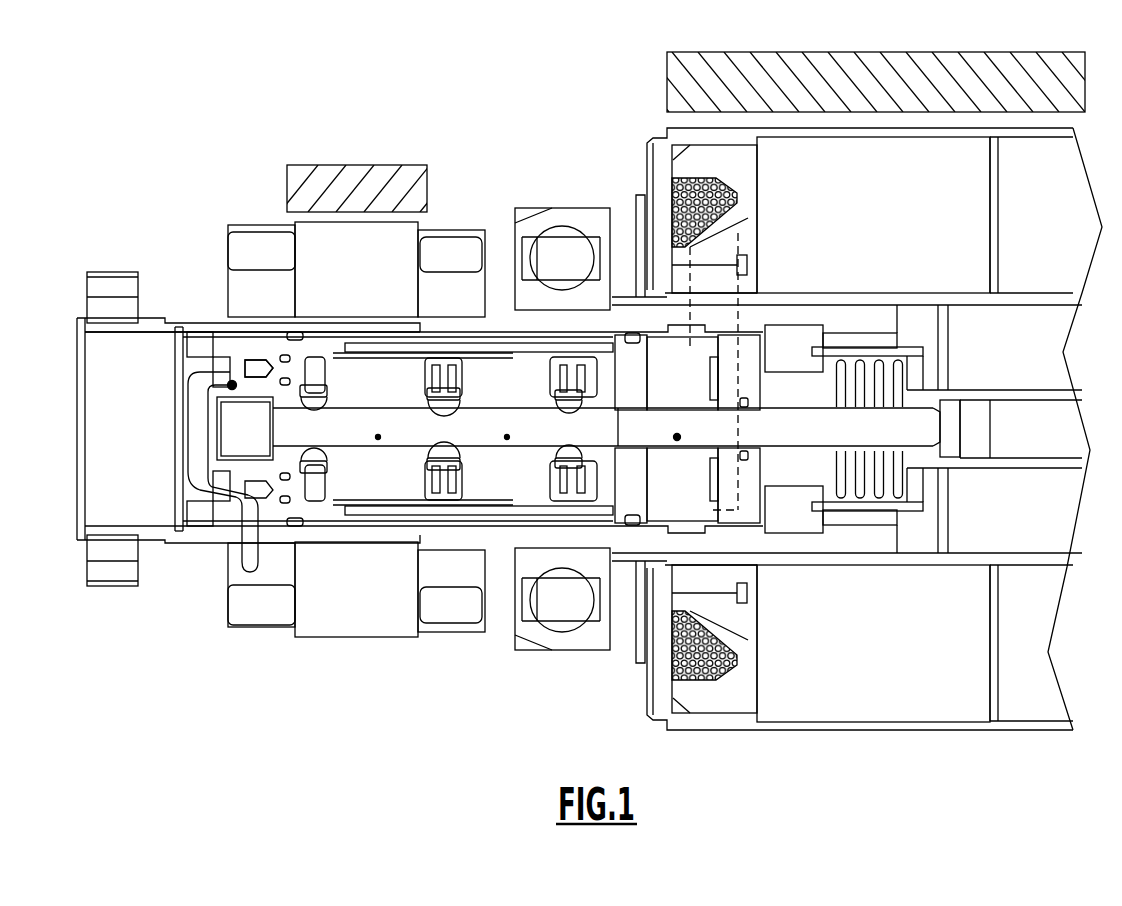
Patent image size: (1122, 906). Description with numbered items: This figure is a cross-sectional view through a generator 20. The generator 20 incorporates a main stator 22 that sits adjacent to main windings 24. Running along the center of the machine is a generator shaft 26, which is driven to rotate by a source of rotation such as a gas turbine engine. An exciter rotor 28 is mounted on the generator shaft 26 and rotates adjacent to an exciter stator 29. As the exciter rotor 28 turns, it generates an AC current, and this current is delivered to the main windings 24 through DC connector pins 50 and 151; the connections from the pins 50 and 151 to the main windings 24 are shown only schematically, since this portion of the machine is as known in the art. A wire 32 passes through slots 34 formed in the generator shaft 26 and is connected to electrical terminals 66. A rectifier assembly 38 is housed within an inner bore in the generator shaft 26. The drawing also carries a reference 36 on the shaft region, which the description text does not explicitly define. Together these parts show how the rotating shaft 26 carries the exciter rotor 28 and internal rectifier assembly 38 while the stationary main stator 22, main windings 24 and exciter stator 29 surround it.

The generator 20 is at (540, 140).
The main stator 22 is at (845, 83).
The main windings 24 is at (873, 215).
The generator shaft 26 is at (638, 547).
The exciter rotor 28 is at (356, 269).
The exciter stator 29 is at (345, 163).
The wire 32 is at (202, 481).
The slots 34 is at (263, 532).
The shaft 36 is at (748, 433).
The rectifier assembly 38 is at (324, 323).
The DC connector pin 50 is at (512, 352).
The electrical terminals 66 is at (253, 367).
The DC connector pin 151 is at (513, 510).